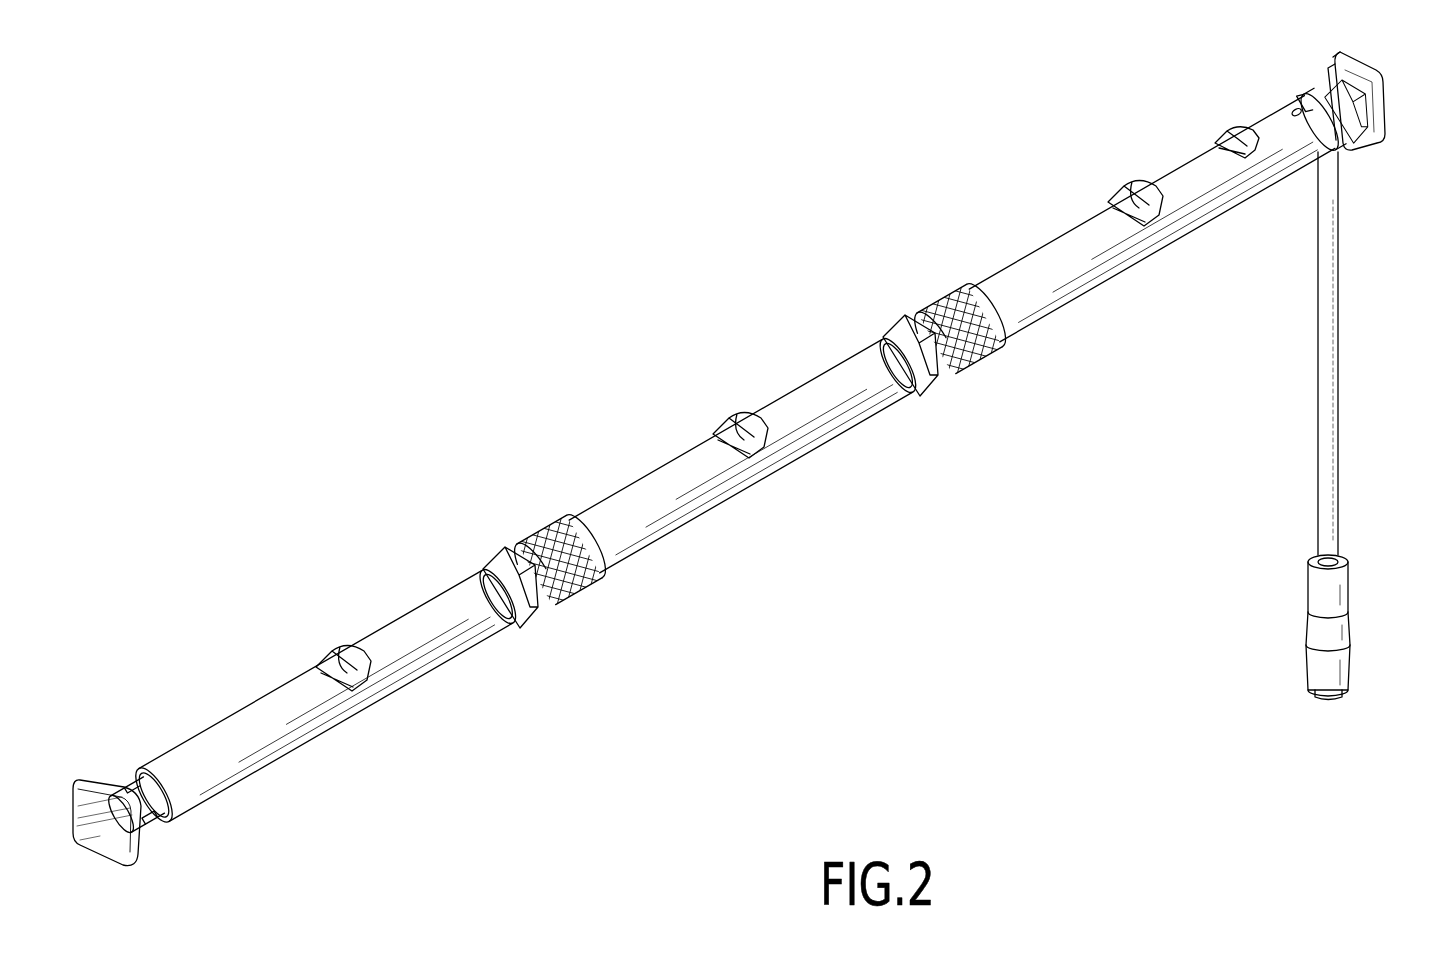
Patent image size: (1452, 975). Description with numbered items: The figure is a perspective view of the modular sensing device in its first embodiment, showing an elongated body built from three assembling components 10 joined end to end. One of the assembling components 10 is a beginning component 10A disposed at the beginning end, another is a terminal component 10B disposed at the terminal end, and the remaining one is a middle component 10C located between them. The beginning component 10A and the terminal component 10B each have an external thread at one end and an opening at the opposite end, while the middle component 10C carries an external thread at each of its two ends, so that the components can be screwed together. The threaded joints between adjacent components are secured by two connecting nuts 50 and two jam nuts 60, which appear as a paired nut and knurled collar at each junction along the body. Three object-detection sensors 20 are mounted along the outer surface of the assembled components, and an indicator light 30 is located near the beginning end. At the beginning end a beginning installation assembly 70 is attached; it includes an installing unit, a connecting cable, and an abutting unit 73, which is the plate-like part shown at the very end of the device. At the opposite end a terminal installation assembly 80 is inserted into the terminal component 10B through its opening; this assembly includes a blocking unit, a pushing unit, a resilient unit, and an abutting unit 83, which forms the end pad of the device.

The assembling component 10 is at (726, 487).
The beginning component 10A is at (1070, 302).
The terminal component 10B is at (295, 750).
The middle component 10C is at (685, 523).
The object-detection sensor 20 is at (1120, 198).
The indicator light 30 is at (1235, 138).
The connecting nut 50 is at (552, 533).
The jam nut 60 is at (508, 551).
The beginning installation assembly 70 is at (1364, 163).
The abutting unit 73 is at (1320, 60).
The terminal installation assembly 80 is at (163, 836).
The abutting unit 83 is at (97, 772).